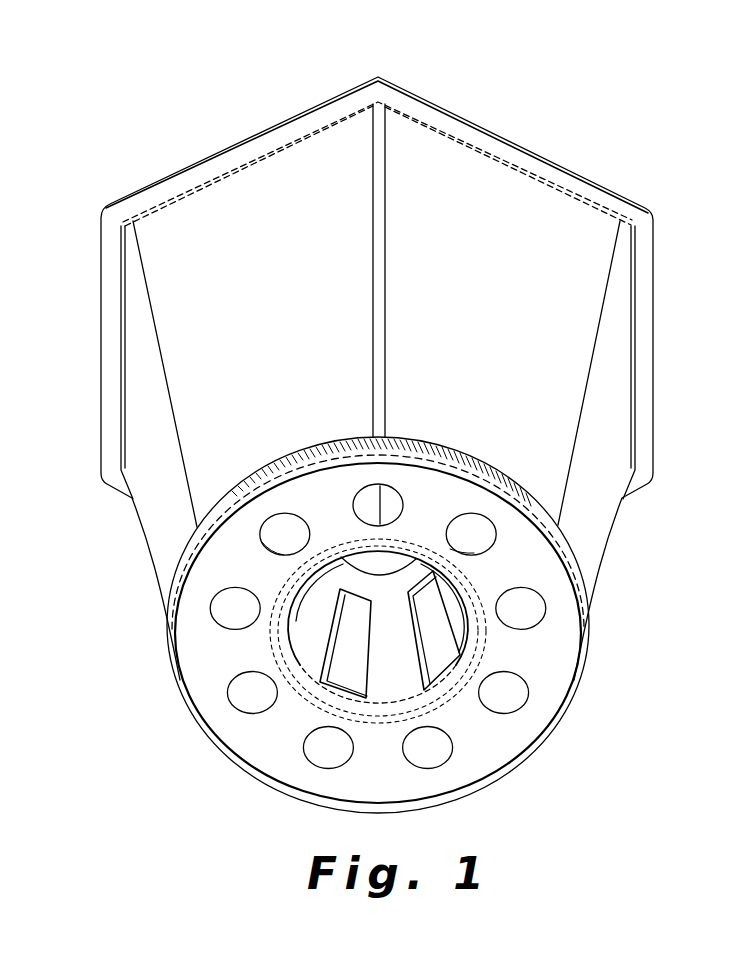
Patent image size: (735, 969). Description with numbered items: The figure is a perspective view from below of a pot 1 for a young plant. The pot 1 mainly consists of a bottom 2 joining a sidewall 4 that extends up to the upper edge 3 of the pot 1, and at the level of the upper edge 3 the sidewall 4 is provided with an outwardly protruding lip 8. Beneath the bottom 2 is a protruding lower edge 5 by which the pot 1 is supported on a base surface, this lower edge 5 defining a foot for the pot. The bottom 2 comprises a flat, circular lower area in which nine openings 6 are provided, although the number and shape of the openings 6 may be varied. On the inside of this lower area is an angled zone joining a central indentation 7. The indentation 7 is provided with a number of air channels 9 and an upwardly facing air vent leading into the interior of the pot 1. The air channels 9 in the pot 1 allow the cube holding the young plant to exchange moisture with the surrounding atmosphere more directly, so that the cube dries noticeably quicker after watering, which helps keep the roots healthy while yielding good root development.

The pot 1 is at (515, 85).
The bottom 2 is at (480, 732).
The upper edge 3 is at (600, 203).
The sidewall 4 is at (283, 214).
The lower edge 5 is at (480, 487).
The openings 6 is at (252, 695).
The central indentation 7 is at (387, 647).
The lip 8 is at (377, 95).
The air channels 9 is at (353, 658).